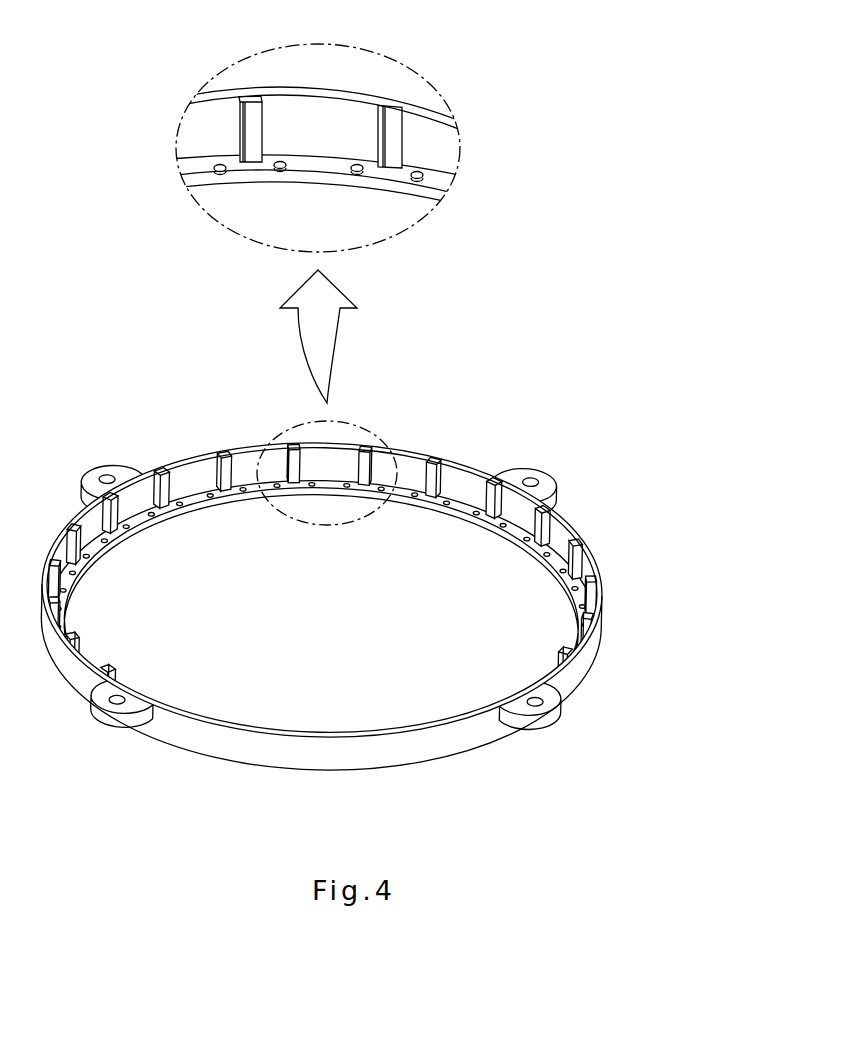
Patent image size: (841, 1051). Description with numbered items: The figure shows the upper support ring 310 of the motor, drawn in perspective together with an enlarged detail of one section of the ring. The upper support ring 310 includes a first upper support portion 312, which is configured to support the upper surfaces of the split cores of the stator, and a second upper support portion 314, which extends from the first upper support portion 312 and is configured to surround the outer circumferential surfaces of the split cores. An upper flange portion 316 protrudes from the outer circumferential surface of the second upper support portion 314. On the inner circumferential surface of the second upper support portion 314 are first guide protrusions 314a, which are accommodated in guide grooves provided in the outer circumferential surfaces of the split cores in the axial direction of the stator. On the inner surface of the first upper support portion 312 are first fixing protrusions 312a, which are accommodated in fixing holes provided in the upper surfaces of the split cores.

The upper support ring 310 is at (371, 389).
The first upper support portion 312 is at (322, 418).
The first fixing protrusions 312a is at (424, 176).
The second upper support portion 314 is at (329, 359).
The first guide protrusions 314a is at (250, 112).
The upper flange portion 316 is at (553, 695).